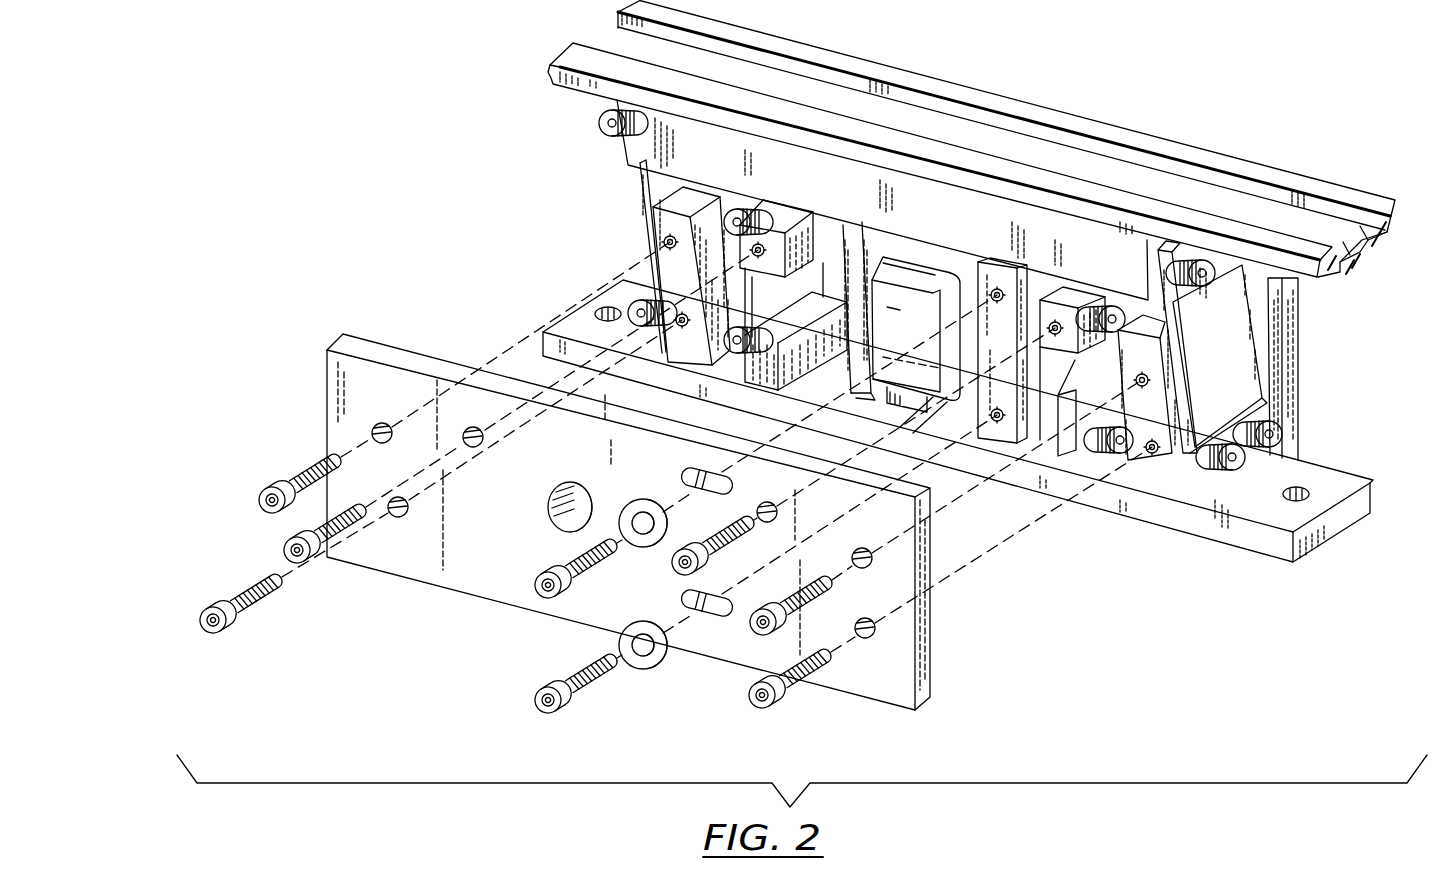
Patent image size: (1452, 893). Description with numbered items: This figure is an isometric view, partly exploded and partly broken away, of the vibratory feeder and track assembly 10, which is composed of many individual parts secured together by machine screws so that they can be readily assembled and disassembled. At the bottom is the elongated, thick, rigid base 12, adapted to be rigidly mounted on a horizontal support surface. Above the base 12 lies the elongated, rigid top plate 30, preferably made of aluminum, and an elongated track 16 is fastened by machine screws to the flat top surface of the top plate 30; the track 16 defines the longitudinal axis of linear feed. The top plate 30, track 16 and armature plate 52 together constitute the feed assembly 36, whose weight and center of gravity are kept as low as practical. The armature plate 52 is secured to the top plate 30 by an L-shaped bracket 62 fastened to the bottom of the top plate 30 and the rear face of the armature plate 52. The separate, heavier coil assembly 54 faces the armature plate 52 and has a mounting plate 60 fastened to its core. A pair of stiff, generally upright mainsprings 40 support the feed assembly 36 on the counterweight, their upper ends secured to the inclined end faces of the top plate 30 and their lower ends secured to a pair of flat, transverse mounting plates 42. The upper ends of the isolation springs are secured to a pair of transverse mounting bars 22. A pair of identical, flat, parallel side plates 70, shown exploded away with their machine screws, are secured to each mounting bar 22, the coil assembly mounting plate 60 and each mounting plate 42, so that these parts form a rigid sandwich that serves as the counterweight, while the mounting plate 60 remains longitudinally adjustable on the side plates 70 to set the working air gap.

The vibratory feeder and track assembly 10 is at (408, 128).
The base 12 is at (1332, 468).
The track 16 is at (1261, 161).
The upper transverse mounting bars 22 is at (787, 212).
The top plate 30 is at (677, 162).
The feed assembly 36 is at (1040, 90).
The mainsprings 40 is at (636, 190).
The mainspring mounting plates 42 is at (659, 289).
The armature plate 52 is at (868, 246).
The coil assembly 54 is at (934, 258).
The coil assembly mounting plate 60 is at (1027, 395).
The L-shaped bracket 62 is at (849, 228).
The side plates 70 is at (478, 529).